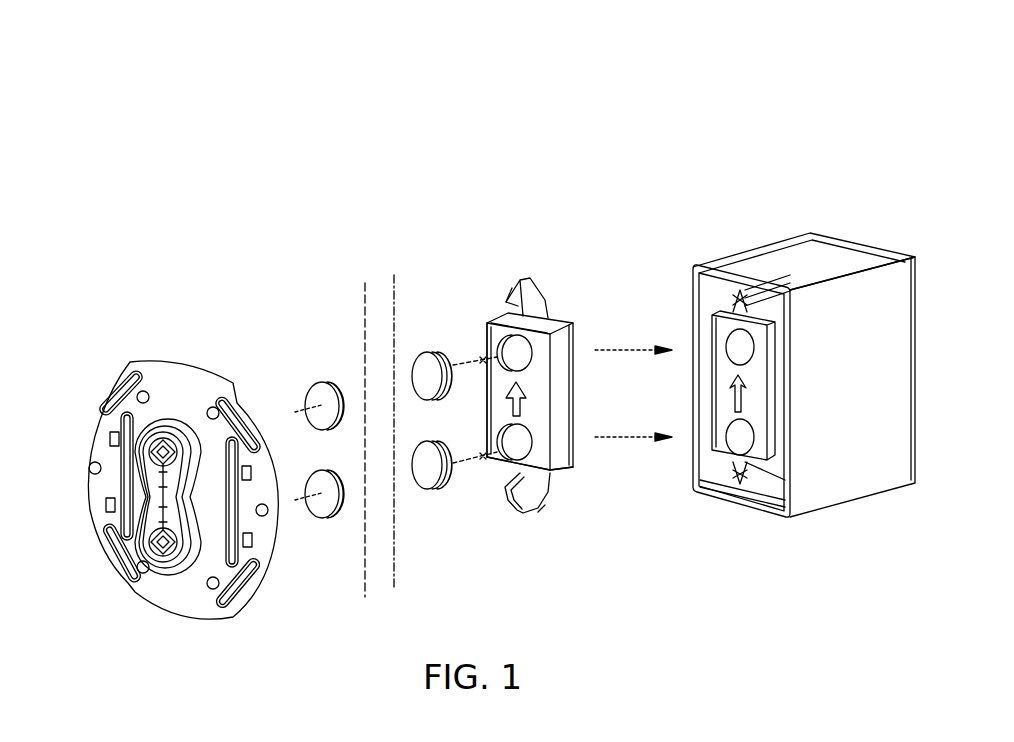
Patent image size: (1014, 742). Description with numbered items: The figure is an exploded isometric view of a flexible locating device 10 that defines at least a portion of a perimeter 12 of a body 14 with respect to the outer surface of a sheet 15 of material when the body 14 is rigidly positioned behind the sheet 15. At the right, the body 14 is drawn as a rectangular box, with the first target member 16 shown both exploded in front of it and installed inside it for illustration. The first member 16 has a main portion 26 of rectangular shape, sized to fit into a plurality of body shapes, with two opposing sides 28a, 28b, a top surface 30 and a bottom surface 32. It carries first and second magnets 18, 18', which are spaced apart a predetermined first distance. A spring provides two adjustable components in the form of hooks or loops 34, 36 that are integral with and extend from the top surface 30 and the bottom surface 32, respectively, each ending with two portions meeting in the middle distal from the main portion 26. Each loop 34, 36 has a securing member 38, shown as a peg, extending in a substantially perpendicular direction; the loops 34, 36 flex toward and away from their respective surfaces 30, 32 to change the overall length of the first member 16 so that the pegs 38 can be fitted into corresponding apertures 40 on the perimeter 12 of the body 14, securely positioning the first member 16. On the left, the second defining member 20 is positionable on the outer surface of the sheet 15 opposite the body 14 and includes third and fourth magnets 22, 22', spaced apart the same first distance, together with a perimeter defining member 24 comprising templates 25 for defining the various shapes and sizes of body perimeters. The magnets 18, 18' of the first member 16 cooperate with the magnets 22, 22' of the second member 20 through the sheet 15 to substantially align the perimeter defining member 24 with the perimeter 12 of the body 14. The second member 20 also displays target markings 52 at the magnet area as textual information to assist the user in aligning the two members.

The flexible locating device 10 is at (278, 95).
The perimeter 12 is at (790, 352).
The body 14 is at (783, 263).
The sheet 15 is at (375, 295).
The first target member 16 is at (643, 373).
The first magnet 18 is at (453, 328).
The second magnet 18' is at (450, 507).
The second defining member 20 is at (152, 449).
The third magnet 22 is at (319, 368).
The fourth magnet 22' is at (321, 534).
The perimeter defining member 24 is at (120, 363).
The templates 25 is at (100, 458).
The main portion 26 is at (553, 412).
The opposing side 28a is at (560, 388).
The opposing side 28b is at (482, 328).
The top surface 30 is at (573, 333).
The bottom surface 32 is at (495, 482).
The hook or loop 34 is at (510, 300).
The hook or loop 36 is at (503, 522).
The securing member 38 is at (537, 286).
The apertures 40 is at (773, 510).
The target markings 52 is at (143, 547).